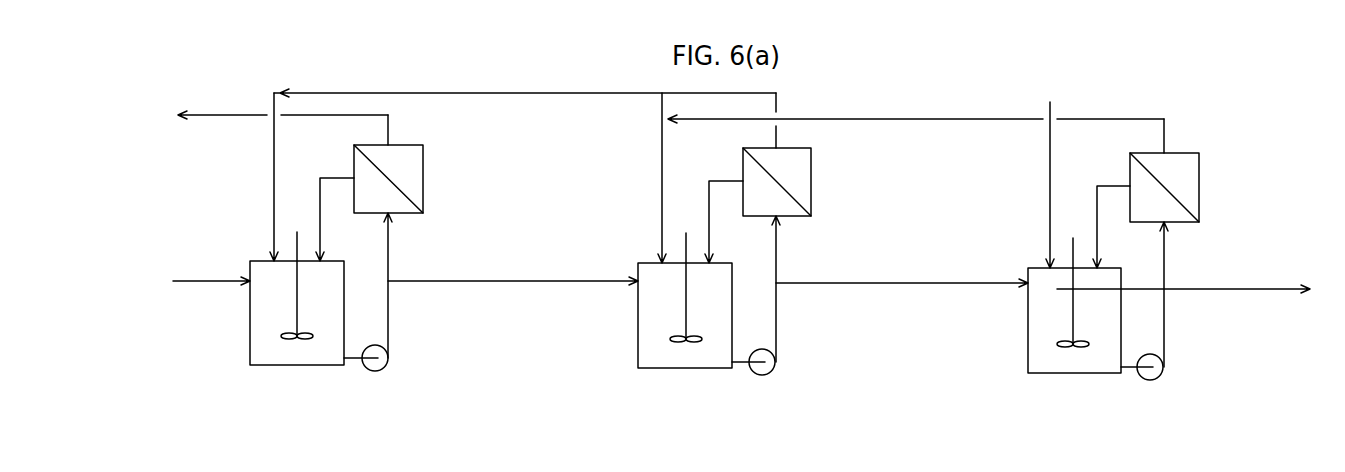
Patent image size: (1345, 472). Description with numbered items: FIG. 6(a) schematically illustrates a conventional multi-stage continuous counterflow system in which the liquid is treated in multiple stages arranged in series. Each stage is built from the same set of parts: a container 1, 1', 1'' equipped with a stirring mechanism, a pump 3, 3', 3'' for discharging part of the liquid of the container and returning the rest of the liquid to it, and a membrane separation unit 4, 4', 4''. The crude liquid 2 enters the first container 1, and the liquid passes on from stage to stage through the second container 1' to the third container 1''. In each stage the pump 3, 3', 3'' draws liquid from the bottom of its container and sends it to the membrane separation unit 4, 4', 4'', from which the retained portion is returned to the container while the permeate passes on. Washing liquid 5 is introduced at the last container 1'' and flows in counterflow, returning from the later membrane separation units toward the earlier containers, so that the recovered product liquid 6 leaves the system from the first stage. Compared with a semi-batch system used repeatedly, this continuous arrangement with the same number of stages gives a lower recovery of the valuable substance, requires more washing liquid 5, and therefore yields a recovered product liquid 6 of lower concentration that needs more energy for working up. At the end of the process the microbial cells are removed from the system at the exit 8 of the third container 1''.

The container 1 is at (513, 260).
The container 1' is at (901, 263).
The container 1'' is at (1074, 338).
The crude liquid 2 is at (200, 282).
The pump 3 is at (491, 313).
The pump 3' is at (880, 316).
The pump 3'' is at (1165, 321).
The membrane separation unit 4 is at (406, 188).
The membrane separation unit 4' is at (797, 178).
The membrane separation unit 4'' is at (1188, 193).
The washing liquid 5 is at (1051, 169).
The recovered product liquid 6 is at (269, 116).
The exit (microbial cells) 8 is at (1195, 291).